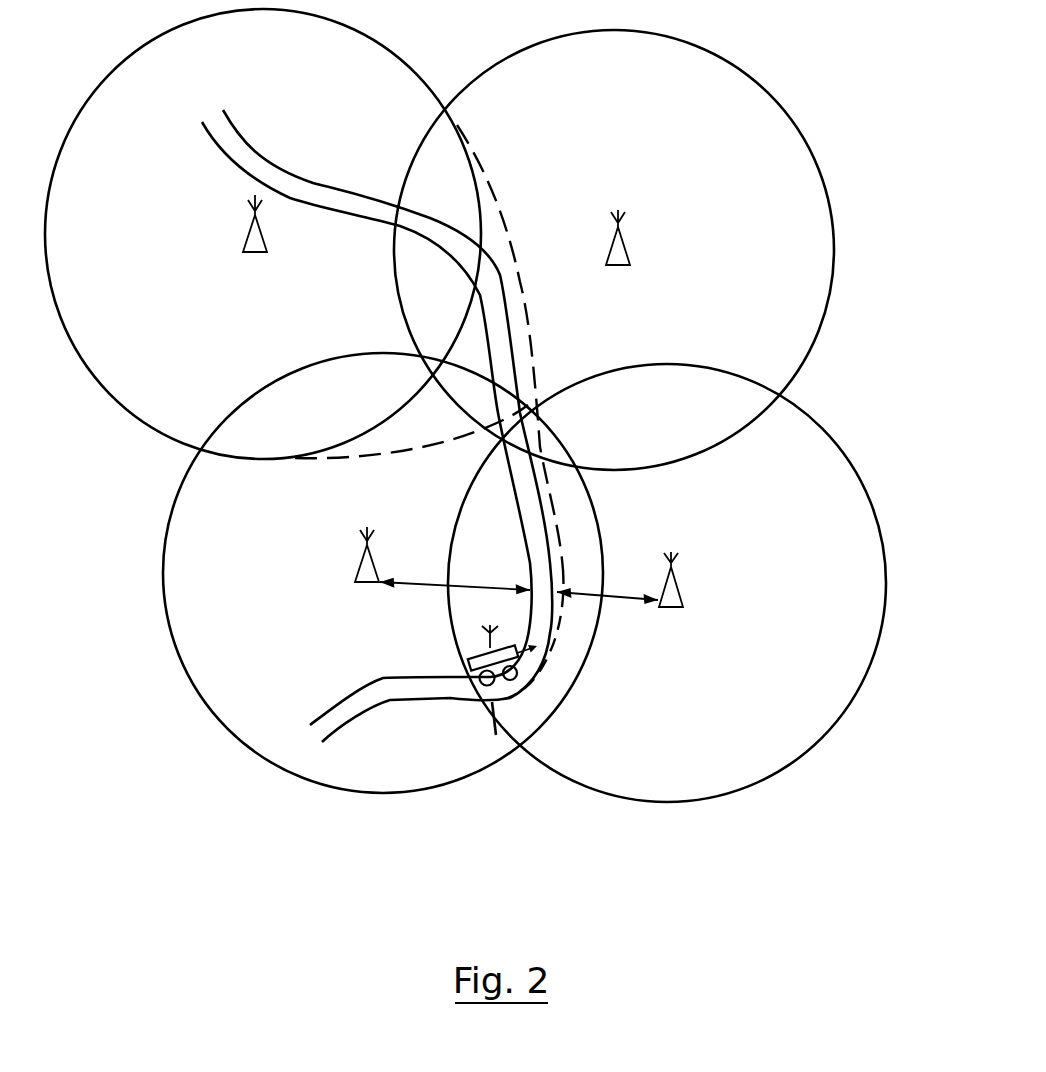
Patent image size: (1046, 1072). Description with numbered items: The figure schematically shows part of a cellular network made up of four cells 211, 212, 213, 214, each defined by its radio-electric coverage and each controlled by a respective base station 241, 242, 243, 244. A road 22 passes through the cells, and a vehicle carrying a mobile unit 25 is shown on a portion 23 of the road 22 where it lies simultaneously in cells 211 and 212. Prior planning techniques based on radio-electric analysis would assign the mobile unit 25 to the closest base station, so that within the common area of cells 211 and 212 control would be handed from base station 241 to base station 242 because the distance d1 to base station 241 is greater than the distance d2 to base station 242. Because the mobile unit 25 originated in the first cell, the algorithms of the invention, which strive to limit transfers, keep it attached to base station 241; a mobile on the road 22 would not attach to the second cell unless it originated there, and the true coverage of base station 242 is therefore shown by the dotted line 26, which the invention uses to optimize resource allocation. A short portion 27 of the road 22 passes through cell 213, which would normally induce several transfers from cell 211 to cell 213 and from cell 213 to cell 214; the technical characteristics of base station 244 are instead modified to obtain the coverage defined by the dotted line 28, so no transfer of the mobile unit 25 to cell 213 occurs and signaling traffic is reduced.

The cell 211 is at (258, 733).
The cell 212 is at (745, 785).
The cell 213 is at (755, 125).
The cell 214 is at (105, 357).
The base station 241 is at (355, 570).
The base station 242 is at (677, 588).
The base station 243 is at (631, 257).
The base station 244 is at (250, 235).
The road 22 is at (388, 702).
The portion of road 23 is at (537, 642).
The mobile unit 25 is at (473, 652).
The dotted line 26 is at (530, 687).
The short portion of road 27 is at (510, 340).
The dotted line 28 is at (513, 233).
The distance d1 is at (455, 572).
The distance d2 is at (607, 584).